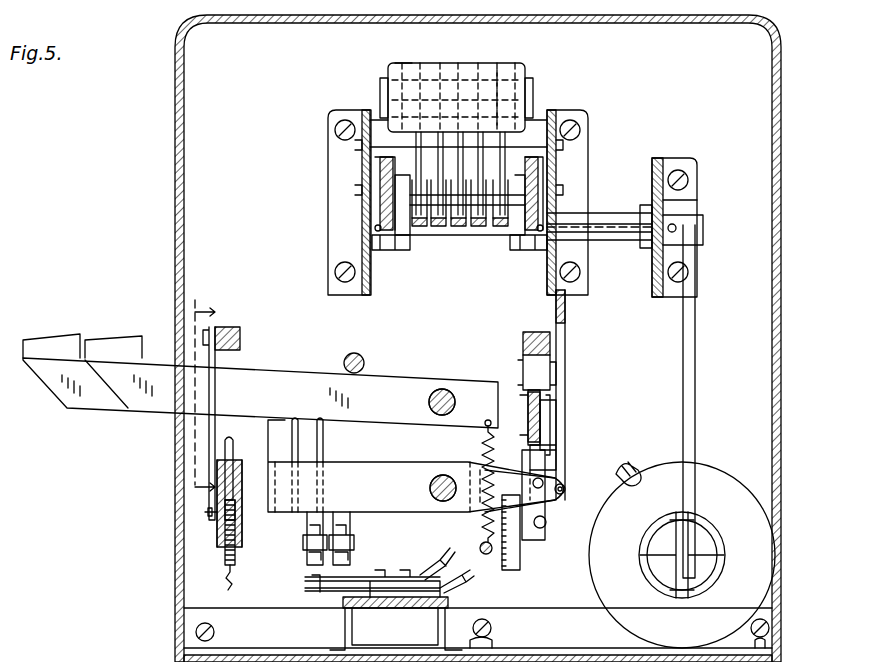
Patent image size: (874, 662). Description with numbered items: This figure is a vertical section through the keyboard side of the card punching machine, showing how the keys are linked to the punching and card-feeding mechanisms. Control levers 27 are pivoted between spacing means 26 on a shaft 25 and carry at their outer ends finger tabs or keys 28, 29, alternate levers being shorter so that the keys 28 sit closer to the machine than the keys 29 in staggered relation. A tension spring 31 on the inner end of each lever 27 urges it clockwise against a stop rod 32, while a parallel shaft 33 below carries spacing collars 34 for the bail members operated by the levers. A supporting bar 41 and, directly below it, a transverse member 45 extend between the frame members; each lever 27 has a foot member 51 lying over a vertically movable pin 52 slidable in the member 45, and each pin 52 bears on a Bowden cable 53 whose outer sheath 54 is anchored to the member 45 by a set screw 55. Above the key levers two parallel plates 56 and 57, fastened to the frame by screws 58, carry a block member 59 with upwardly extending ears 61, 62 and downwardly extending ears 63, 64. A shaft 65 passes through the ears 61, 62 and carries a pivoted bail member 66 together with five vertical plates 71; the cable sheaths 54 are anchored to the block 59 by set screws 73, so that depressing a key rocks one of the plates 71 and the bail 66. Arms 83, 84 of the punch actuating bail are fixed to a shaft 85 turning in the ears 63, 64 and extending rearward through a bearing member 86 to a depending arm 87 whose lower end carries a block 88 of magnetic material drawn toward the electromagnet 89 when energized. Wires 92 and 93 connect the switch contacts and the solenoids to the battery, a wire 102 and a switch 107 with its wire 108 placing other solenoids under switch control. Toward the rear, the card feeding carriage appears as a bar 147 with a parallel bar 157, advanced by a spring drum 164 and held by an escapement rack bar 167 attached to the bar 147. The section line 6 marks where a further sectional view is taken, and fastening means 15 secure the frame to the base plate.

The section line 6 is at (202, 399).
The fastening means 15 is at (492, 627).
The shaft 25 is at (450, 390).
The spacing means 26 is at (452, 392).
The control levers 27 is at (400, 378).
The keys 28 is at (120, 336).
The keys 29 is at (68, 334).
The tension spring 31 is at (486, 438).
The stop rod 32 is at (362, 358).
The shaft 33 is at (430, 490).
The spacing collars 34 is at (432, 482).
The supporting bar 41 is at (240, 330).
The transverse member 45 is at (216, 536).
The foot member 51 is at (270, 414).
The pin 52 is at (231, 456).
The Bowden cable 53 is at (243, 580).
The outer sheath 54 is at (236, 556).
The set screw 55 is at (205, 512).
The plate 56 is at (570, 118).
The plate 57 is at (350, 118).
The screws 58 is at (336, 272).
The block member 59 is at (540, 118).
The ear 61 is at (505, 78).
The ear 62 is at (402, 62).
The ear 63 is at (518, 252).
The ear 64 is at (400, 252).
The shaft 65 is at (381, 84).
The bail member 66 is at (465, 53).
The vertical plates 71 is at (368, 148).
The set screws 73 is at (460, 228).
The arm 83 is at (378, 212).
The arm 84 is at (560, 212).
The shaft 85 is at (622, 240).
The bearing member 86 is at (680, 200).
The depending arm 87 is at (697, 378).
The hub 88 is at (705, 545).
The electromagnet 89 is at (730, 460).
The wire 92 is at (634, 462).
The wire 93 is at (625, 466).
The wire 102 is at (470, 568).
The switch 107 is at (312, 592).
The wire 108 is at (444, 555).
The bar 147 is at (520, 410).
The parallel bar 157 is at (536, 330).
The spring drum 164 is at (524, 556).
The rack bar 167 is at (560, 414).